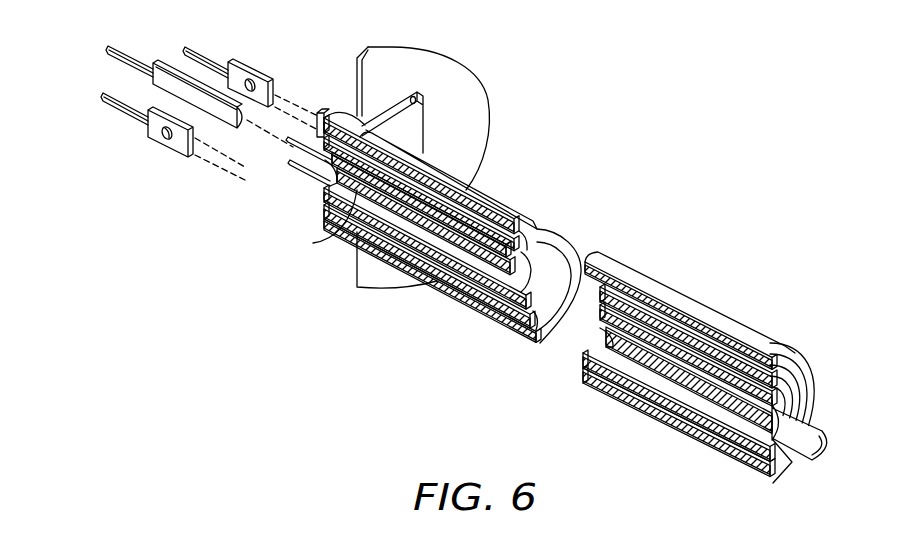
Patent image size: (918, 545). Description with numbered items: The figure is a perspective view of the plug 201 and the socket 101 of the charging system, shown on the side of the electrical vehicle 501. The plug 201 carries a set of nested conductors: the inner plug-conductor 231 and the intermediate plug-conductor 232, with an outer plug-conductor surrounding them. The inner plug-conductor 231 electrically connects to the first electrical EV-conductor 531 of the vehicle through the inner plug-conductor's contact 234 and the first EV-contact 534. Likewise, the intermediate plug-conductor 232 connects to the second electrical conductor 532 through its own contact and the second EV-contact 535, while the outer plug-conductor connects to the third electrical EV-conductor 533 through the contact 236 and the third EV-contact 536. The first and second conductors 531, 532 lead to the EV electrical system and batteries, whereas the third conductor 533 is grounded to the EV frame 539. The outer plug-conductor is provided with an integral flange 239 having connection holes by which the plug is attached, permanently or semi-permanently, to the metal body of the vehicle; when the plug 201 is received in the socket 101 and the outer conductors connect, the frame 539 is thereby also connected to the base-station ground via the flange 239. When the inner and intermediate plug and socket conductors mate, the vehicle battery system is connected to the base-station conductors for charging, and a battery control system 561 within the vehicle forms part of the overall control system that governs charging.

The socket 101 is at (670, 428).
The plug 201 is at (483, 317).
The inner plug-conductor 231 is at (343, 223).
The intermediate plug-conductor 232 is at (480, 220).
The inner plug-conductor's contact 234 is at (290, 160).
The plug-conductor's contact 236 is at (325, 112).
The flange 239 is at (418, 115).
The electrical vehicle 501 is at (427, 63).
The first electrical EV-conductor 531 is at (123, 62).
The second electrical conductor 532 is at (123, 114).
The third electrical EV-conductor 533 is at (208, 57).
The first EV-contact 534 is at (162, 64).
The second EV-contact 535 is at (167, 145).
The third EV-contact 536 is at (257, 68).
The EV frame 539 is at (385, 97).
The battery control system 561 is at (326, 262).